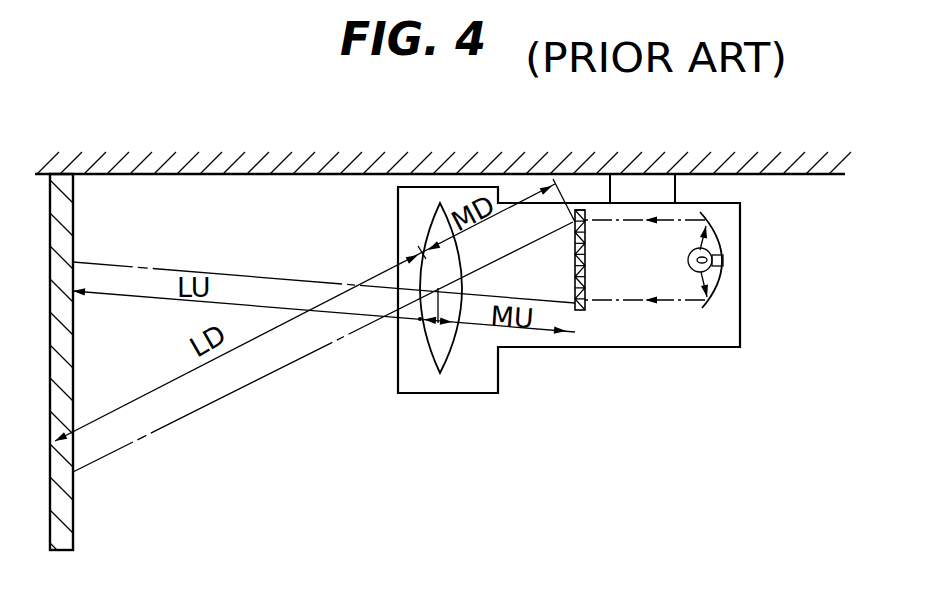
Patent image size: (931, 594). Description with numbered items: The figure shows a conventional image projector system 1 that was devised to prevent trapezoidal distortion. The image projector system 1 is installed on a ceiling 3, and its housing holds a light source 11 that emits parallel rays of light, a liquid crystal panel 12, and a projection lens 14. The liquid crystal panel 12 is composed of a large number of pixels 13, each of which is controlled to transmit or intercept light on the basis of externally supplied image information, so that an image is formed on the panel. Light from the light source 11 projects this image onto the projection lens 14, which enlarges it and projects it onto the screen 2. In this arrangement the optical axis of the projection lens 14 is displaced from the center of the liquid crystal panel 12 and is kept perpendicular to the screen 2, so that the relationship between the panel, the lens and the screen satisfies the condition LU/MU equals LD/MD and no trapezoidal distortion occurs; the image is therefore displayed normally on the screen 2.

The image projector system 1 is at (741, 274).
The screen 2 is at (75, 510).
The ceiling 3 is at (263, 176).
The light source 11 is at (718, 300).
The liquid crystal panel 12 is at (588, 285).
The pixels 13 is at (587, 247).
The projection lens 14 is at (448, 357).